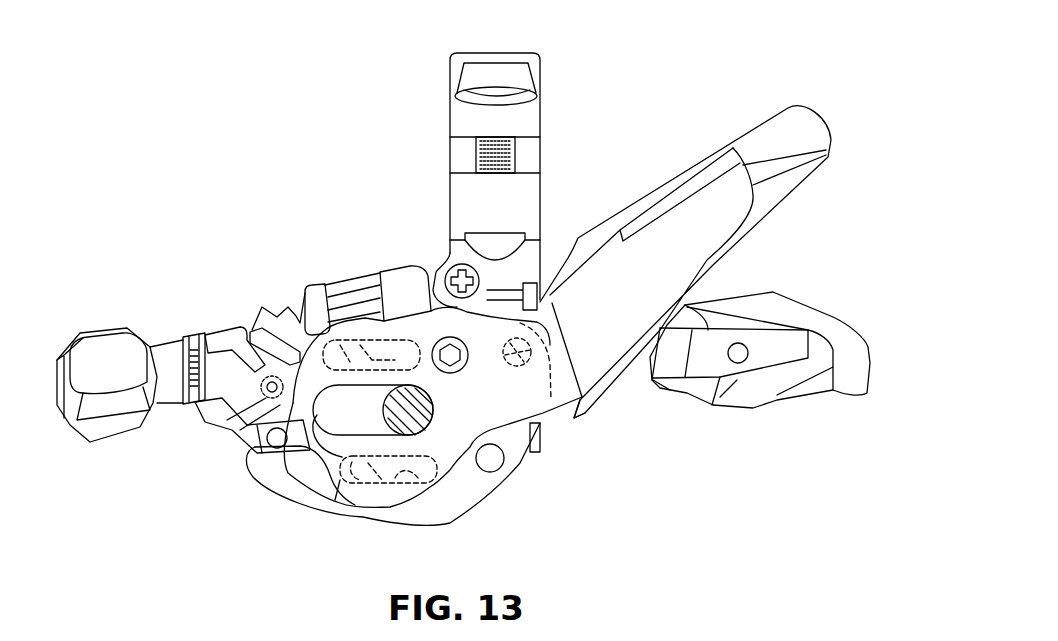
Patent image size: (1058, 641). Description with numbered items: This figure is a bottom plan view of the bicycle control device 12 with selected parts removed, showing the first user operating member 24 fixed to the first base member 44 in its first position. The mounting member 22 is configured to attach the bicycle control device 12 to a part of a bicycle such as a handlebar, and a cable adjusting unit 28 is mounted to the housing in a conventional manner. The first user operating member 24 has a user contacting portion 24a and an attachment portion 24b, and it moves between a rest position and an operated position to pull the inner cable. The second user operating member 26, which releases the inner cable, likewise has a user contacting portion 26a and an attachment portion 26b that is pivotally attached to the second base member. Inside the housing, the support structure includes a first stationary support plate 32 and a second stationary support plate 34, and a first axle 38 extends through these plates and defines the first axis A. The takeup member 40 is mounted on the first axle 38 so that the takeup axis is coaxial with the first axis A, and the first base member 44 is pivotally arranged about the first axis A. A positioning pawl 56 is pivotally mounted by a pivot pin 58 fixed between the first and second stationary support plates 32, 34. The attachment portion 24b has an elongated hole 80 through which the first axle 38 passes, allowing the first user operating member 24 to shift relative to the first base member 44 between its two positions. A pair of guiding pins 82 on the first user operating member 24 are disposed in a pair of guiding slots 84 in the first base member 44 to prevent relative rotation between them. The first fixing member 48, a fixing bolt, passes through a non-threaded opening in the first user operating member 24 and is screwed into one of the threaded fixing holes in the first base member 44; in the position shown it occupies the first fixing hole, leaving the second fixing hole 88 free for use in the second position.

The bicycle control device 12 is at (642, 45).
The mounting member 22 is at (447, 102).
The first user operating member 24 is at (685, 261).
The user contacting portion 24a is at (750, 113).
The attachment portion 24b is at (562, 403).
The second user operating member 26 is at (746, 381).
The user contacting portion 26a is at (833, 393).
The attachment portion 26b is at (641, 368).
The cable adjusting unit 28 is at (100, 328).
The first stationary support plate 32 is at (225, 326).
The second stationary support plate 34 is at (196, 334).
The first axle 38 is at (390, 411).
The takeup member 40 is at (411, 411).
The first base member 44 is at (260, 480).
The first fixing member 48 is at (452, 372).
The positioning pawl 56 is at (258, 338).
The pivot pin 58 is at (230, 432).
The elongated hole 80 is at (313, 473).
The guiding pin 82 is at (296, 305).
The guiding slot 84 is at (398, 337).
The second fixing hole 88 is at (560, 323).
The first axis A is at (428, 417).